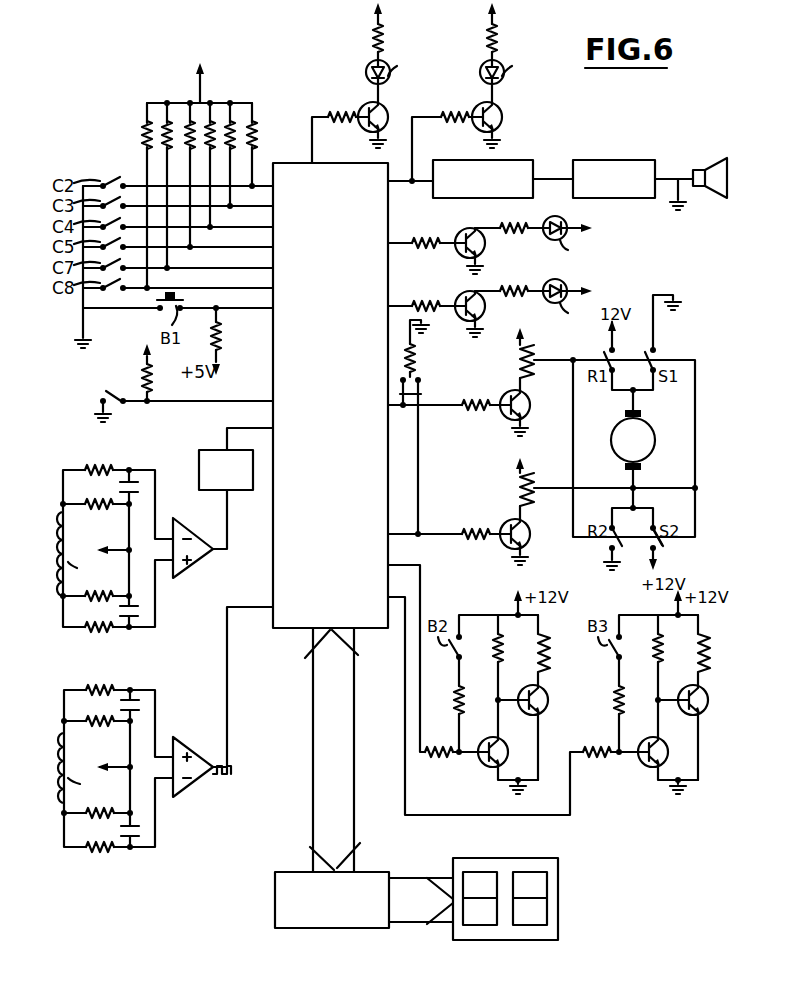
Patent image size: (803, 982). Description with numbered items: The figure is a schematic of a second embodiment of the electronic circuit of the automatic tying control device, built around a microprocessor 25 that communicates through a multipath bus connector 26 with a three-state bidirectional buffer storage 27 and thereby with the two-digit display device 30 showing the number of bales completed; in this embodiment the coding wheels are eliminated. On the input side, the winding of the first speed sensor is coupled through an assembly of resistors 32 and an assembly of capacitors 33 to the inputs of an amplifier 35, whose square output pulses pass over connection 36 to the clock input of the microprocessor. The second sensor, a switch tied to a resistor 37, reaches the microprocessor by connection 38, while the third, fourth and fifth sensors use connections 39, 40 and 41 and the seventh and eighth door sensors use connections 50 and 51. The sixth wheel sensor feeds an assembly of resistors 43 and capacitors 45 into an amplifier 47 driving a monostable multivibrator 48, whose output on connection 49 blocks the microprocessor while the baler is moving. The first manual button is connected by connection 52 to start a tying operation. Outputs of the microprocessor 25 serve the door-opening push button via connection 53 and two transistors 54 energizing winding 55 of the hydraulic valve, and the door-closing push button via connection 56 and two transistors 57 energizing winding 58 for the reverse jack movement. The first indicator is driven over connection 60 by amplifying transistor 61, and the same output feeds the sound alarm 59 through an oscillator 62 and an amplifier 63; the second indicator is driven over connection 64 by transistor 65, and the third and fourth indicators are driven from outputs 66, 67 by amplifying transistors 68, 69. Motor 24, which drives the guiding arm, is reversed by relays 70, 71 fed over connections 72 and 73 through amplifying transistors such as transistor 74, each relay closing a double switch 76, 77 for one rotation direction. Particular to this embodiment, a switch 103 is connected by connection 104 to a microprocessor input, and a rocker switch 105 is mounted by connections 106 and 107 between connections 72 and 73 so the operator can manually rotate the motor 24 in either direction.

The motor 24 is at (646, 436).
The microprocessor 25 is at (305, 550).
The multipath bus connector 26 is at (335, 741).
The three-state bidirectional buffer storage 27 is at (373, 882).
The two-digit display device 30 is at (558, 876).
The assembly of resistors 32 is at (95, 715).
The assembly of capacitors 33 is at (140, 710).
The amplifier 35 is at (203, 750).
The connection 36 is at (228, 668).
The resistor 37 is at (255, 124).
The connection 38 is at (256, 182).
The connection 39 is at (245, 196).
The connection 40 is at (228, 217).
The connection 41 is at (208, 238).
The assembly of resistors 43 is at (92, 500).
The assembly of capacitors 45 is at (138, 492).
The amplifier 47 is at (203, 545).
The monostable multivibrator 48 is at (208, 453).
The connection 49 is at (228, 517).
The connection 50 is at (194, 259).
The connection 51 is at (173, 280).
The connection 52 is at (144, 318).
The connection 53 is at (421, 590).
The transistors 54 is at (505, 744).
The winding 55 is at (552, 665).
The connection 56 is at (406, 788).
The transistors 57 is at (665, 744).
The winding 58 is at (712, 665).
The sound alarm 59 is at (712, 170).
The connection 60 is at (413, 160).
The amplifying transistor 61 is at (497, 110).
The oscillator 62 is at (515, 168).
The amplifier 63 is at (608, 170).
The connection 64 is at (313, 160).
The amplifying transistor 65 is at (383, 110).
The output 66 is at (410, 242).
The output 67 is at (410, 305).
The amplifying transistor 68 is at (465, 236).
The amplifying transistor 69 is at (465, 299).
The relay 70 is at (536, 355).
The relay 71 is at (535, 478).
The connection 72 is at (445, 408).
The connection 73 is at (440, 533).
The amplifying transistor 74 is at (507, 396).
The double switch 76 is at (663, 349).
The double switch 77 is at (663, 550).
The switch 103 is at (117, 406).
The connection 104 is at (234, 401).
The rocker switch 105 is at (414, 362).
The connection 106 is at (421, 394).
The connection 107 is at (418, 475).